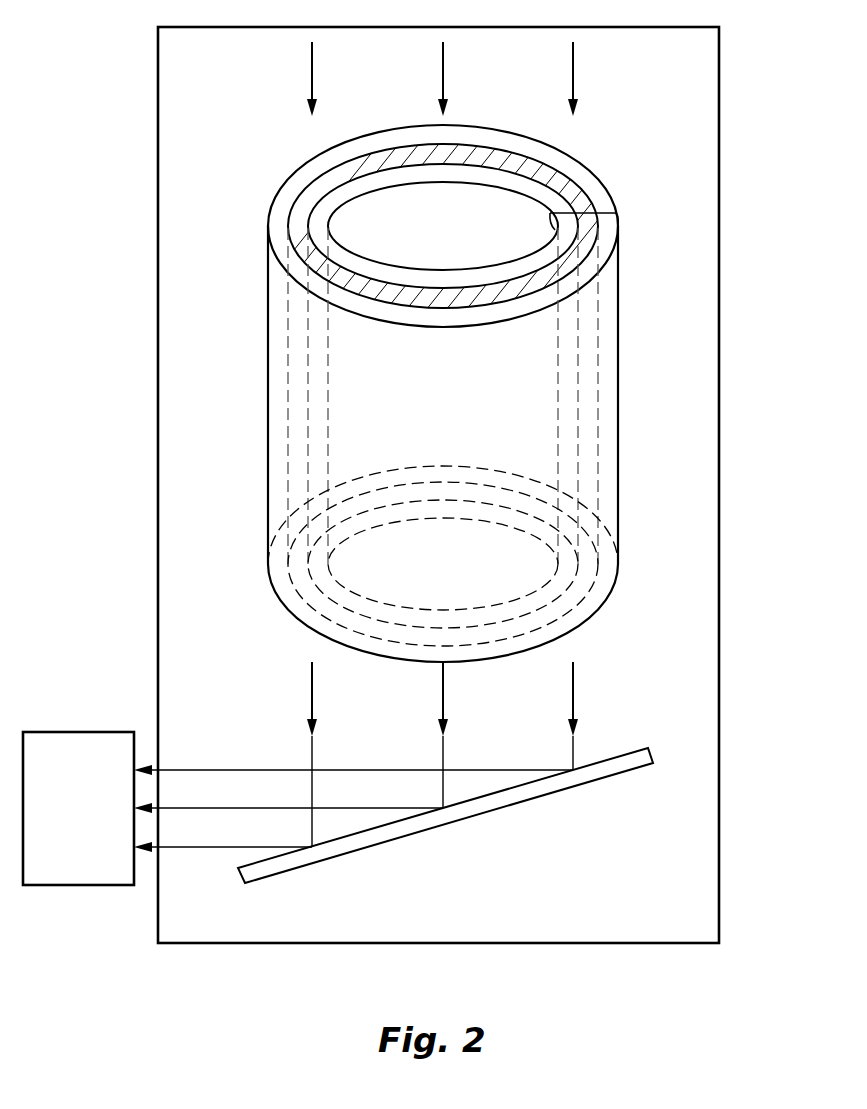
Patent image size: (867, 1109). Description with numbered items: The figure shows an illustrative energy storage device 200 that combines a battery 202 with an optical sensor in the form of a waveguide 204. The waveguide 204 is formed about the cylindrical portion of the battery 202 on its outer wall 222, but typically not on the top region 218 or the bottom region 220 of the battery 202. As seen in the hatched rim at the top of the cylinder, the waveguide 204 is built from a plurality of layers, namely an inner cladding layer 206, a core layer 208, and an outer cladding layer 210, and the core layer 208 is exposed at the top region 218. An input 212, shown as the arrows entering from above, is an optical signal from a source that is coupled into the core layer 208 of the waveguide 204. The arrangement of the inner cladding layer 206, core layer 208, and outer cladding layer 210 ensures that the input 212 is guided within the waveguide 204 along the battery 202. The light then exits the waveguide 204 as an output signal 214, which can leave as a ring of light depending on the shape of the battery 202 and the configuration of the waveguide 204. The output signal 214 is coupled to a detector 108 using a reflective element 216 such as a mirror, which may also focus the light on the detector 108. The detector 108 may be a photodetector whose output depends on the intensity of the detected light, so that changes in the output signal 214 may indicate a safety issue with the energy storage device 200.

The detector 108 is at (79, 887).
The energy storage device 200 is at (719, 72).
The battery 202 is at (500, 203).
The waveguide 204 is at (583, 200).
The inner cladding layer 206 is at (553, 247).
The core layer 208 is at (555, 276).
The outer cladding layer 210 is at (563, 292).
The input 212 is at (285, 65).
The output signal 214 is at (285, 695).
The reflective element 216 is at (560, 782).
The top region 218 is at (367, 228).
The bottom region 220 is at (368, 571).
The outer wall 222 is at (441, 267).